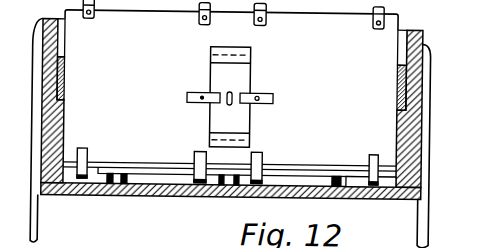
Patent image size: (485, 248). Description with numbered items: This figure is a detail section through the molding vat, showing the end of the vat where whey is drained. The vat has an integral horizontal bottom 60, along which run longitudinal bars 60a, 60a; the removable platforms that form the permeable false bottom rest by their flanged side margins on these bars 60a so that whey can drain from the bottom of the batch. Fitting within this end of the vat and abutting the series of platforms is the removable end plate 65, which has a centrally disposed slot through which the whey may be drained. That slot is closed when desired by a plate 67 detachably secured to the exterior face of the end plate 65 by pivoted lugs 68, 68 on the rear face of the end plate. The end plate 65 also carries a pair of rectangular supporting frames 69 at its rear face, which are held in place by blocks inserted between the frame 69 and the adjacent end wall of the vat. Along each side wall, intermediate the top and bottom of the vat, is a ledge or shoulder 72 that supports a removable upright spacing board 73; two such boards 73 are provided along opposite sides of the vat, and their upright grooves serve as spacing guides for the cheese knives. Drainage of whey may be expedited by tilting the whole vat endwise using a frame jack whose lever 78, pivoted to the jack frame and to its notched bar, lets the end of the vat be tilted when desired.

The horizontal bottom 60 is at (138, 193).
The bars 60a is at (110, 177).
The end plate 65 is at (264, 97).
The plate 67 is at (229, 85).
The pivoted lugs 68 is at (192, 96).
The rectangular supporting frames 69 is at (468, 216).
The ledge or shoulder 72 is at (63, 99).
The spacing board 73 is at (63, 71).
The lever 78 is at (427, 94).